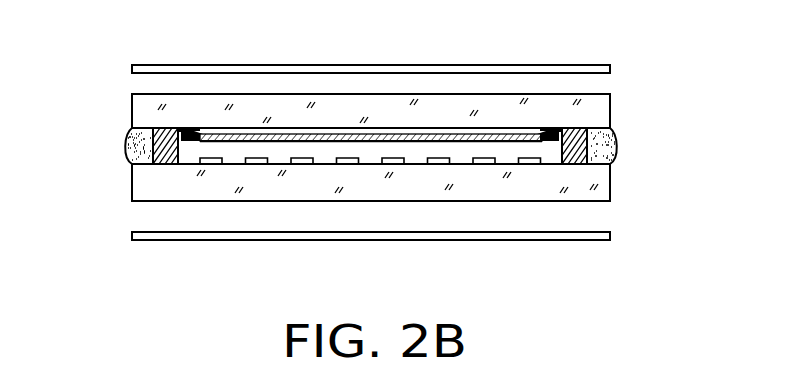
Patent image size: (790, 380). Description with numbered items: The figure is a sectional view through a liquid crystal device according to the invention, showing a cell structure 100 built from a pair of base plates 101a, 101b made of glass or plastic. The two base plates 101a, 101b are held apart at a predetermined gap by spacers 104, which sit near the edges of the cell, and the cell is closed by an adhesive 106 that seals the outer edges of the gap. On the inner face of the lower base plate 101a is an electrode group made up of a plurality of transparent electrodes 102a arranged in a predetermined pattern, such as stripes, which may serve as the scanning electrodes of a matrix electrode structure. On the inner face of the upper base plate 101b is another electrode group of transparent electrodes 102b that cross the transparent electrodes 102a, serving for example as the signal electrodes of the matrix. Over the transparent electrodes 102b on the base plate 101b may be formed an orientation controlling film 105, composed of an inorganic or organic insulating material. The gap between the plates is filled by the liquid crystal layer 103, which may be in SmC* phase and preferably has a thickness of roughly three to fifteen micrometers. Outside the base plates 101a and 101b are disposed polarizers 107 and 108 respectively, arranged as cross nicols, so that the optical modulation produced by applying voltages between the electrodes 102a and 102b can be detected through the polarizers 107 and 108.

The cell structure 100 is at (621, 94).
The base plate 101a is at (600, 186).
The base plate 101b is at (600, 113).
The transparent electrodes 102a is at (253, 165).
The transparent electrodes 102b is at (513, 136).
The liquid crystal layer 103 is at (278, 150).
The spacers 104 is at (163, 143).
The orientation controlling film 105 is at (374, 142).
The adhesive 106 is at (128, 150).
The polarizer 107 is at (615, 235).
The polarizer 108 is at (565, 70).